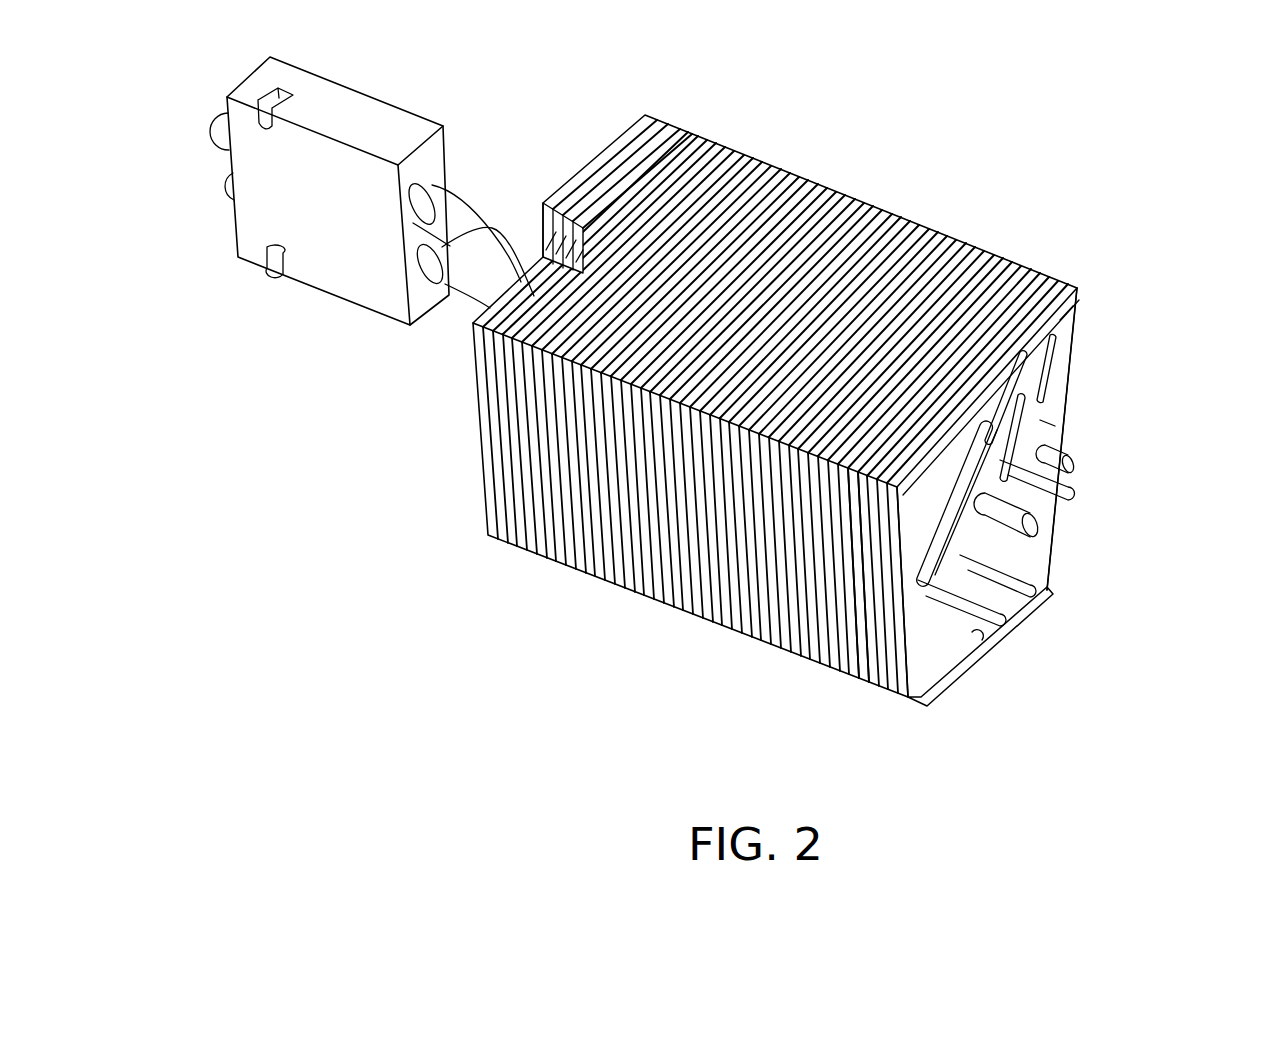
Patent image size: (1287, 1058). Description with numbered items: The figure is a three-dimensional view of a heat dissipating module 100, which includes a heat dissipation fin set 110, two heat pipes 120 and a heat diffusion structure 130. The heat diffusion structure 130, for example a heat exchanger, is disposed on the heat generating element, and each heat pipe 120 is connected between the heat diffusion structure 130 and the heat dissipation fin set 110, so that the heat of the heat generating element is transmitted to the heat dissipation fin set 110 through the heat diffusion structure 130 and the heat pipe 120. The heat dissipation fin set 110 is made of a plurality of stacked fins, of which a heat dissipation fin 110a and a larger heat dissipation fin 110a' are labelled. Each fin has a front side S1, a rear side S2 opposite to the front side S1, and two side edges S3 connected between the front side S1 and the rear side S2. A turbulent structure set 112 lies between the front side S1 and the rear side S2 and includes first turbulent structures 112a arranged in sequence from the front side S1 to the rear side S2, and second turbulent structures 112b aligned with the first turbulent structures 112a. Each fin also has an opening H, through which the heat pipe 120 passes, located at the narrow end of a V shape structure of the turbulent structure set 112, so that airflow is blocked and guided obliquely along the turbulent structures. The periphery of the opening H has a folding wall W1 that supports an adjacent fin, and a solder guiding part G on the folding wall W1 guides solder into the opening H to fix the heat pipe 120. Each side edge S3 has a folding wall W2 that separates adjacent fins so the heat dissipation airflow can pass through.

The heat dissipating module 100 is at (1285, 703).
The heat dissipation fin set 110 is at (824, 430).
The heat dissipation fin 110a is at (996, 646).
The heat dissipation fin 110a' is at (1118, 314).
The turbulent structure set 112 is at (1063, 530).
The first turbulent structures 112a is at (1067, 484).
The second turbulent structures 112b is at (1025, 425).
The heat pipe 120 is at (530, 258).
The heat diffusion structure 130 is at (357, 107).
The front side S1 is at (890, 443).
The rear side S2 is at (1078, 373).
The side edge S3 is at (895, 432).
The solder guiding part G is at (1044, 440).
The opening H is at (978, 637).
The folding wall W1 is at (903, 478).
The folding wall W2 is at (853, 518).